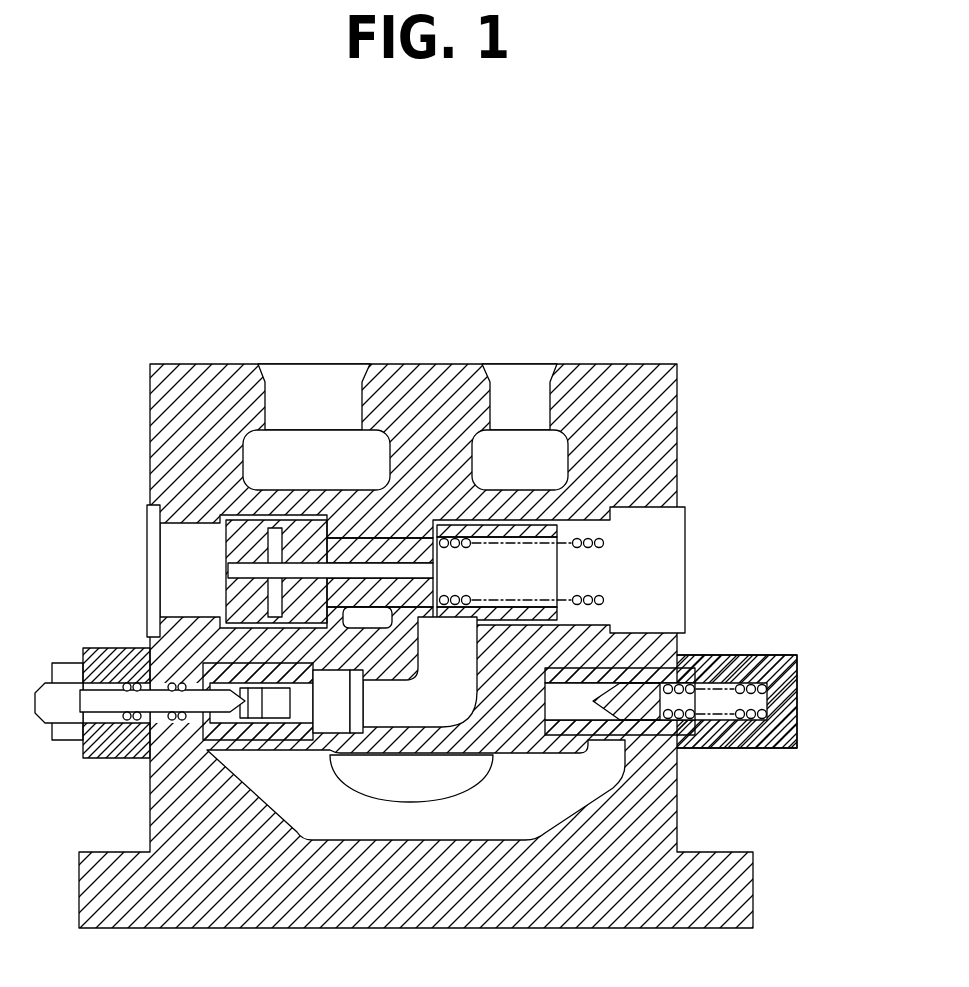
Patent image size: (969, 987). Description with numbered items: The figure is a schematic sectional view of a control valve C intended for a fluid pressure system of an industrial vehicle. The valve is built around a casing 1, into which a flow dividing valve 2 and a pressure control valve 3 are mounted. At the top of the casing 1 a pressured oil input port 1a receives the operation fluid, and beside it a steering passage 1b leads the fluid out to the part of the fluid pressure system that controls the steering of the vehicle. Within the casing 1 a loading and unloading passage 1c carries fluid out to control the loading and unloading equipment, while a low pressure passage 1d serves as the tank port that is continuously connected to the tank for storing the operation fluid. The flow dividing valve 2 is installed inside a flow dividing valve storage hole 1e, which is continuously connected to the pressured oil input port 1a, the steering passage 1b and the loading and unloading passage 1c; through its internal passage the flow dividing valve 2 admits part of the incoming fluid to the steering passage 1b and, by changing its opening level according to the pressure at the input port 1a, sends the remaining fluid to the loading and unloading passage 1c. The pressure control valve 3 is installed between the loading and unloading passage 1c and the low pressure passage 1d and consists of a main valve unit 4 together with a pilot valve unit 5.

The control valve C is at (631, 307).
The casing 1 is at (196, 364).
The pressured oil input port 1a is at (322, 406).
The steering passage 1b is at (521, 405).
The loading and unloading passage 1c is at (458, 642).
The low pressure passage 1d is at (428, 777).
The flow dividing valve storage hole 1e is at (462, 525).
The flow dividing valve 2 is at (224, 553).
The pressure control valve 3 is at (73, 747).
The main valve unit 4 is at (285, 741).
The pilot valve unit 5 is at (188, 740).